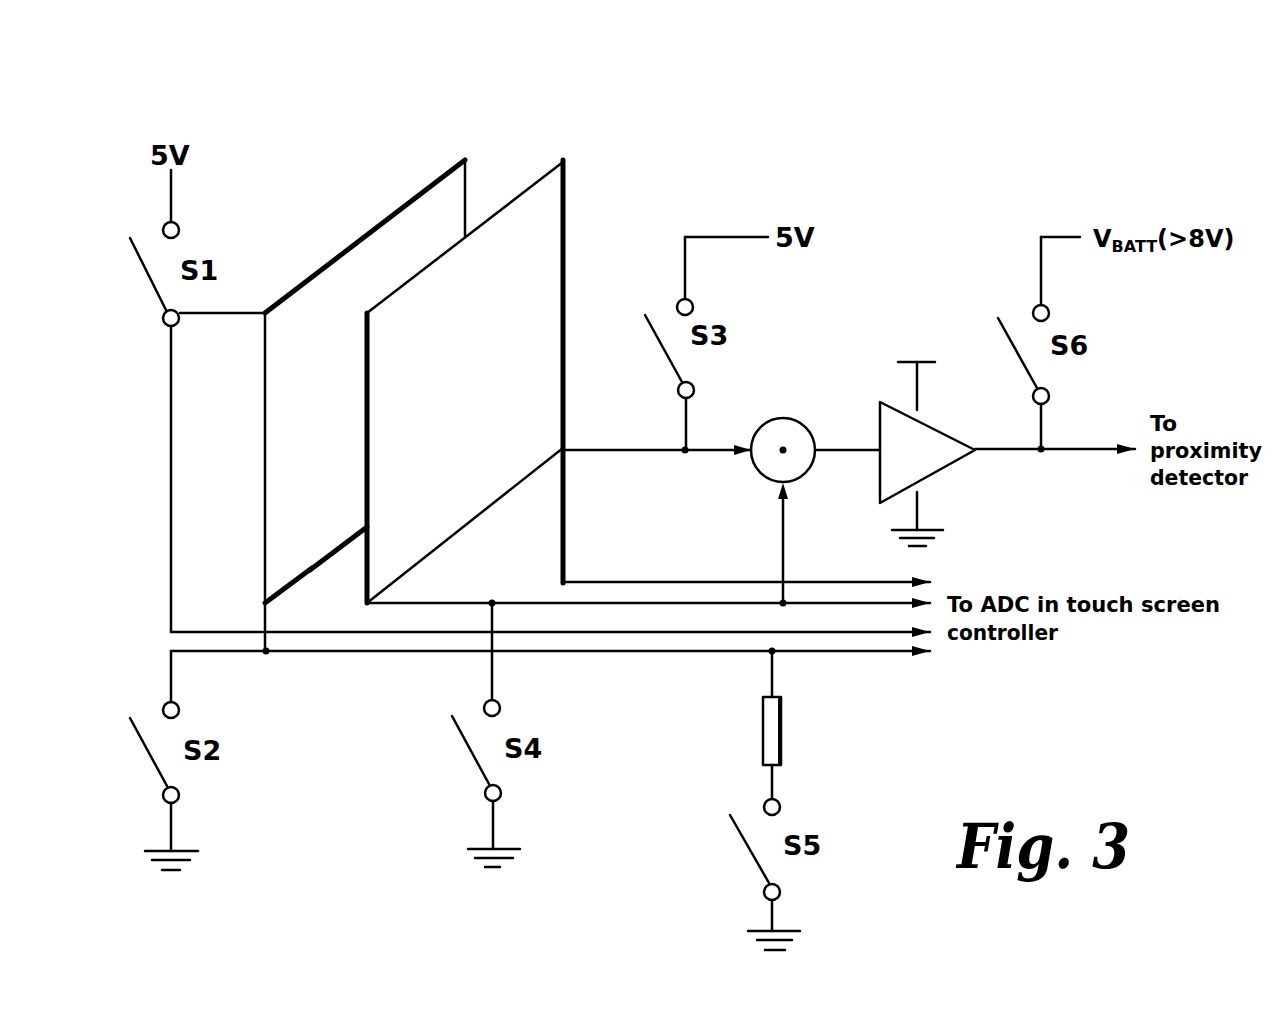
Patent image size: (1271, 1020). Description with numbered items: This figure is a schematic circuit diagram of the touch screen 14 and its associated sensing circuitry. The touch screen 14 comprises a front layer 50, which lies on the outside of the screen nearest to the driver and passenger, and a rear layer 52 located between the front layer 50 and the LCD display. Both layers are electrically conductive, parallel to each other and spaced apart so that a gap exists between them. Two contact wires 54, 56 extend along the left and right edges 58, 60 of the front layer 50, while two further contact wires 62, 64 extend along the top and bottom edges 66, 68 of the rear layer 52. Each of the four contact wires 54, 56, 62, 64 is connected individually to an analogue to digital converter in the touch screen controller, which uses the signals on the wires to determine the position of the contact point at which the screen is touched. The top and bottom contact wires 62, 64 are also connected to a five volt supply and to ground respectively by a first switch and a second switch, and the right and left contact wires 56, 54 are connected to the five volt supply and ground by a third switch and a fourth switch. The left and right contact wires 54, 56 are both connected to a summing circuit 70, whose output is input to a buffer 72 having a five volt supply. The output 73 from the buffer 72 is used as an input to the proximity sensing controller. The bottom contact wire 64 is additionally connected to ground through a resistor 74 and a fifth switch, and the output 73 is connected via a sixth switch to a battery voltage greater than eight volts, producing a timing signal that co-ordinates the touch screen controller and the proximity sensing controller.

The touch screen 14 is at (350, 155).
The front layer 50 is at (522, 252).
The rear layer 52 is at (370, 278).
The contact wire 54 is at (366, 483).
The contact wire 56 is at (565, 290).
The left edge 58 is at (364, 580).
The right edge 60 is at (552, 176).
The contact wire 62 is at (296, 290).
The contact wire 64 is at (290, 578).
The top edge 66 is at (443, 197).
The bottom edge 68 is at (325, 540).
The summing circuit 70 is at (783, 418).
The buffer 72 is at (882, 408).
The output 73 is at (1013, 452).
The resistor 74 is at (779, 732).